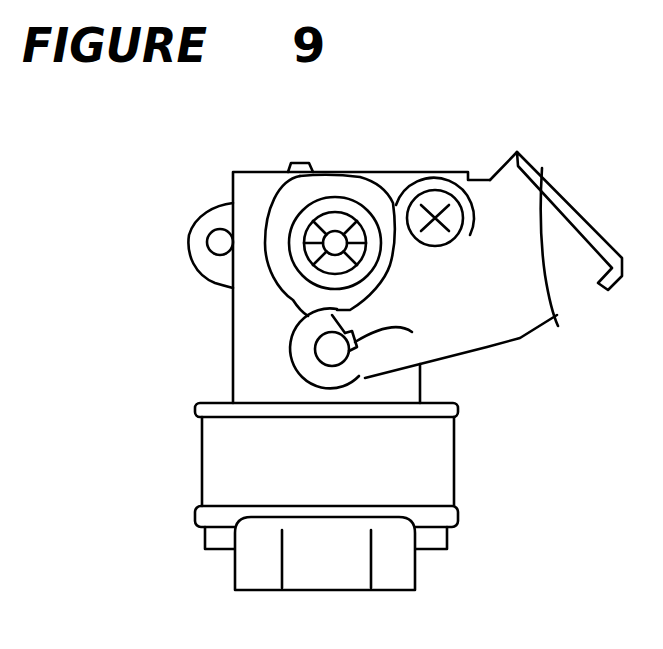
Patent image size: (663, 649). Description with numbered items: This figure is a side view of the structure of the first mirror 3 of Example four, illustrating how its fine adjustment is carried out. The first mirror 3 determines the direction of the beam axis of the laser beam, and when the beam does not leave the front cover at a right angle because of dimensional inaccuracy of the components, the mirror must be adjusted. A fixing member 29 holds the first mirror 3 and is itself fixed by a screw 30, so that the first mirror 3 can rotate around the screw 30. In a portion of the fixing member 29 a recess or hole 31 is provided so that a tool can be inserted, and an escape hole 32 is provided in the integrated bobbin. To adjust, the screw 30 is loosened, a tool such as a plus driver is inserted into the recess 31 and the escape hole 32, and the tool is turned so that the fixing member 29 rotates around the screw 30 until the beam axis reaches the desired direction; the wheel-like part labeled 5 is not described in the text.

The first mirror 3 is at (597, 268).
The adjusting wheel 5 is at (334, 240).
The fixing member 29 is at (512, 207).
The screw 30 is at (459, 200).
The recess or hole 31 is at (412, 332).
The escape hole 32 is at (315, 346).